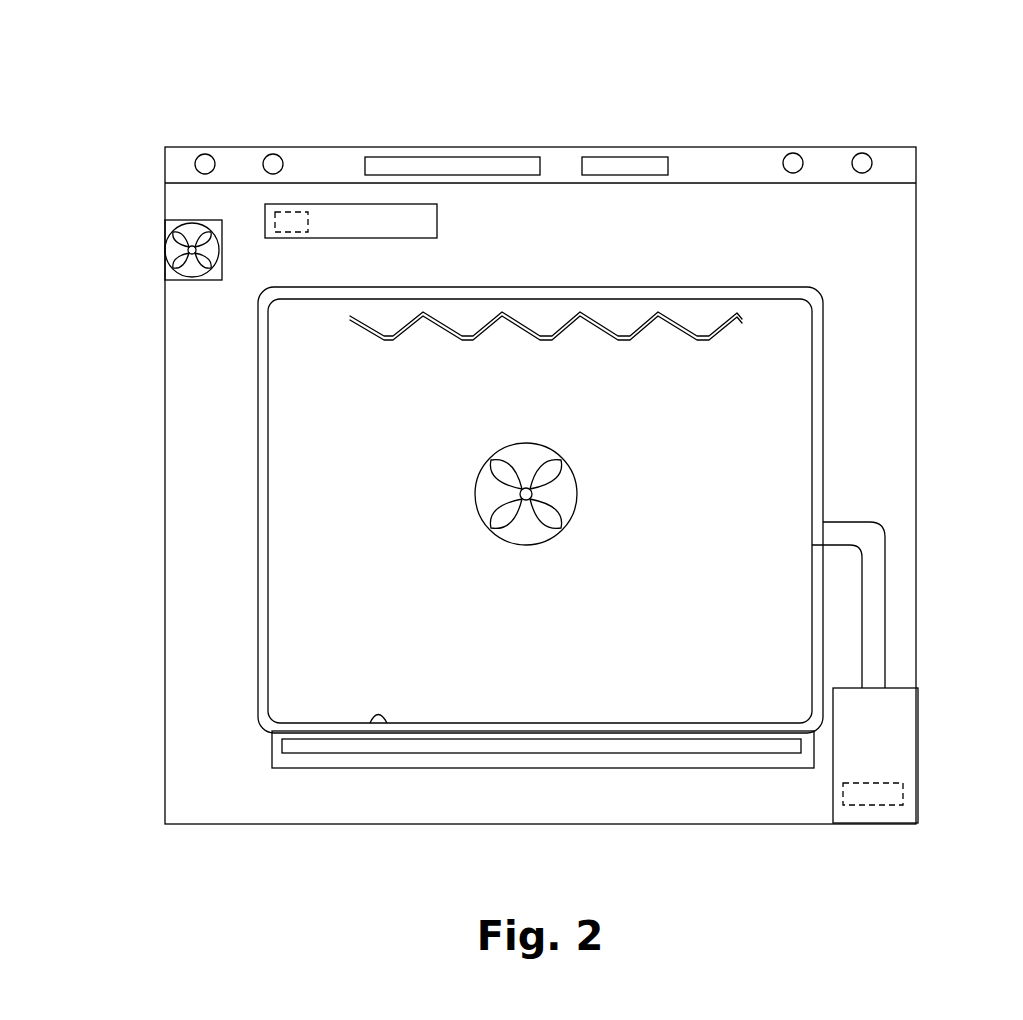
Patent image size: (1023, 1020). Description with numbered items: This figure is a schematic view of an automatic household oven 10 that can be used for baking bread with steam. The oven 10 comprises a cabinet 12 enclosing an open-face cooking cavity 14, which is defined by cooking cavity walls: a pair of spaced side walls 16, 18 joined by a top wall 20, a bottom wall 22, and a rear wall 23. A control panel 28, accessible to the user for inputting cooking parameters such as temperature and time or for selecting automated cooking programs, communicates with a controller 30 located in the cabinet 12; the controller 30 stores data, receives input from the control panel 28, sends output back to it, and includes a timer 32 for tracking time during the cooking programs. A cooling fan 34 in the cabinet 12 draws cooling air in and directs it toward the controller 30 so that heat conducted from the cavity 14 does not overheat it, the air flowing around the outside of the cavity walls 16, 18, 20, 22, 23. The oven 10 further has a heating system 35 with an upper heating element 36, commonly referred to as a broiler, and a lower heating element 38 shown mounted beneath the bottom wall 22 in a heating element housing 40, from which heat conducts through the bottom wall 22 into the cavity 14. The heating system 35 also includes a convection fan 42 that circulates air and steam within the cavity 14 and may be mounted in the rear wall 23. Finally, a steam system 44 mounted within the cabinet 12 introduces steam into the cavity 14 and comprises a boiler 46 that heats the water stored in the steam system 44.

The oven 10 is at (176, 115).
The cabinet 12 is at (163, 463).
The cooking cavity 14 is at (569, 624).
The side wall 16 is at (818, 480).
The side wall 18 is at (266, 536).
The top wall 20 is at (722, 301).
The bottom wall 22 is at (372, 722).
The rear wall 23 is at (758, 572).
The control panel 28 is at (553, 147).
The controller 30 is at (335, 204).
The timer 32 is at (292, 210).
The cooling fan 34 is at (190, 281).
The heating system 35 is at (448, 340).
The upper heating element 36 is at (722, 332).
The lower heating element 38 is at (452, 750).
The heating element housing 40 is at (815, 763).
The convection fan 42 is at (577, 480).
The steam system 44 is at (901, 688).
The boiler 46 is at (903, 783).